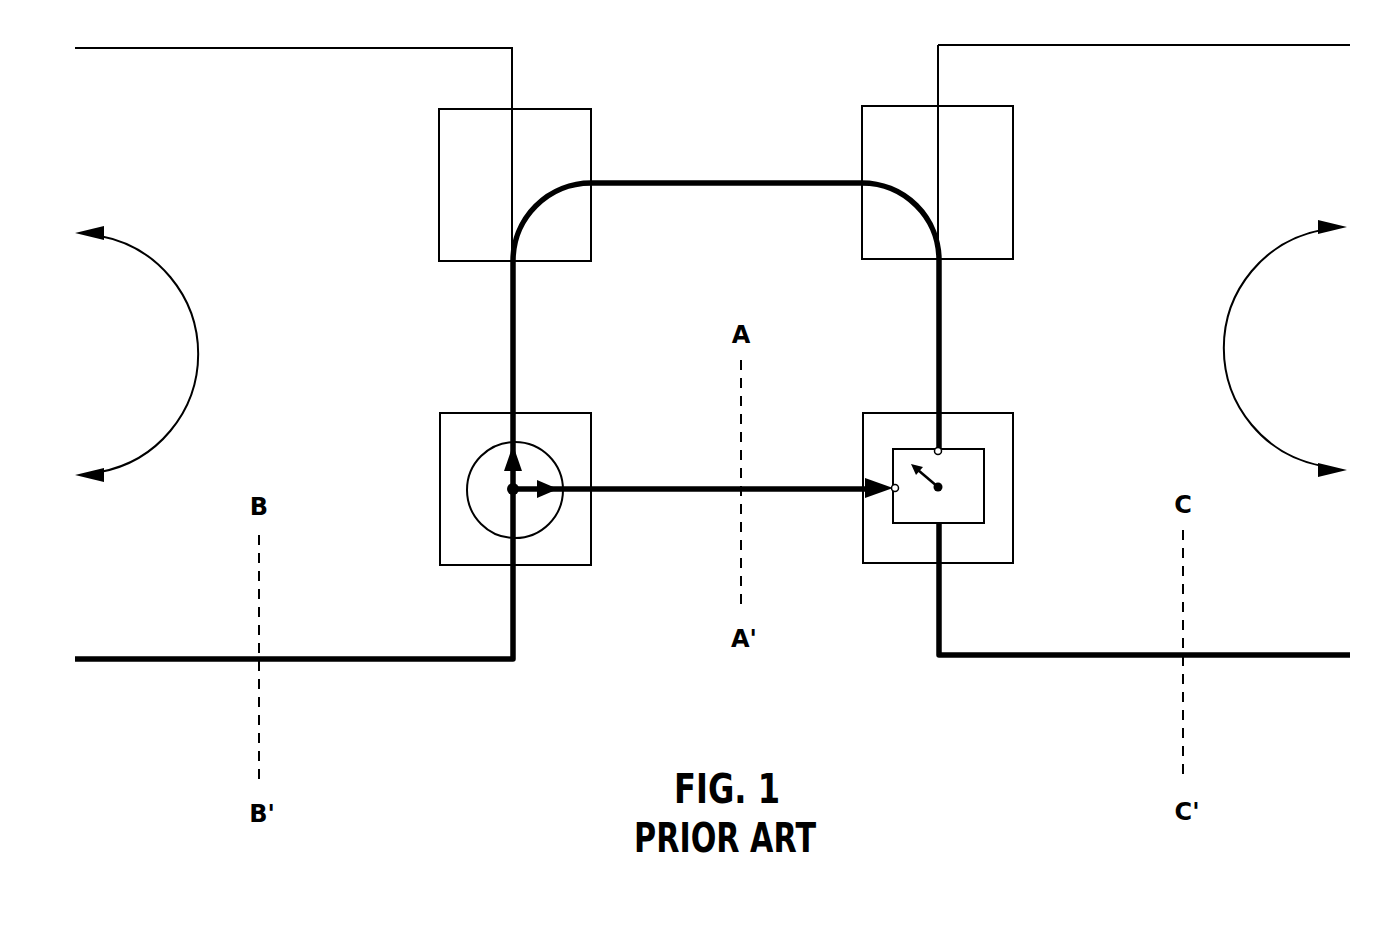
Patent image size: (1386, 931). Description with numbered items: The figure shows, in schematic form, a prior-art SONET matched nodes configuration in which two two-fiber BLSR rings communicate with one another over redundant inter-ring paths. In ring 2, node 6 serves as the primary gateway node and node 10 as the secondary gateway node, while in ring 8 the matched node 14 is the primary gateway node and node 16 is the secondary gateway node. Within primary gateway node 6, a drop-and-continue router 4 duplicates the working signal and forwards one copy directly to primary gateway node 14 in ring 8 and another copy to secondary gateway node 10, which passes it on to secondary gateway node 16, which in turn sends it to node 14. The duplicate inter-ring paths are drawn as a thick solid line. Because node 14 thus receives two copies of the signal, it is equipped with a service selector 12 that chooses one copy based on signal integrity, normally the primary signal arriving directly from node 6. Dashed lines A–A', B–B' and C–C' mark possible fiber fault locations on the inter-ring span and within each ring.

The ring 2 is at (108, 399).
The drop-and-continue router 4 is at (472, 466).
The primary gateway node 6 is at (562, 413).
The ring 8 is at (1295, 394).
The secondary gateway node 10 is at (562, 108).
The service selector 12 is at (985, 497).
The primary gateway node 14 is at (889, 413).
The secondary gateway node 16 is at (889, 106).